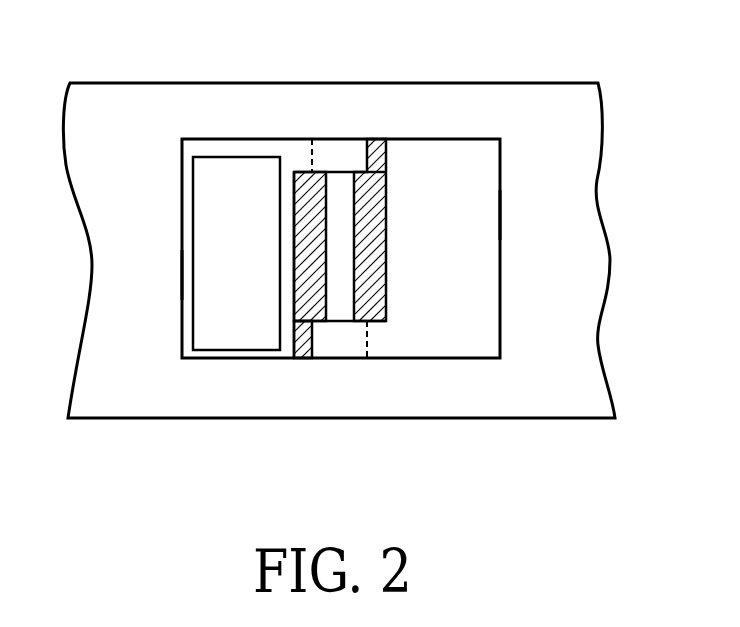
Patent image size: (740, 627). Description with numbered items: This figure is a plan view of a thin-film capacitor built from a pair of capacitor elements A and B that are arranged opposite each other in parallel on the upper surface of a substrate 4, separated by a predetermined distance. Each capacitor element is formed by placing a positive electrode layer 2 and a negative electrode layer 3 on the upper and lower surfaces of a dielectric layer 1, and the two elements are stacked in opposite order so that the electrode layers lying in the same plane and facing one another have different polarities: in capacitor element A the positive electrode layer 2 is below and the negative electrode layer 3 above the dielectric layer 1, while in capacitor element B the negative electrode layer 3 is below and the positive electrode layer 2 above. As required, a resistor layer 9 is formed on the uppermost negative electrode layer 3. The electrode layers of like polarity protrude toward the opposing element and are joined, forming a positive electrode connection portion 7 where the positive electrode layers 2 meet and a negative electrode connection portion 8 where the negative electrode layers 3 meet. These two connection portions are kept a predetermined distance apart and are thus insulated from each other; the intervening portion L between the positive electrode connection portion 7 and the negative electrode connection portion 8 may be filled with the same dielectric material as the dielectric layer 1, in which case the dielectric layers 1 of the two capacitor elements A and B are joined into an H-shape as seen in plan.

The dielectric layer 1 is at (297, 197).
The positive electrode layer 2 is at (455, 348).
The negative electrode layer 3 is at (237, 360).
The substrate 4 is at (577, 337).
The positive electrode connection portion 7 is at (338, 345).
The negative electrode connection portion 8 is at (340, 131).
The resistor layer 9 is at (199, 192).
The portion between connection portions L is at (342, 228).
The capacitor element A is at (166, 280).
The capacitor element B is at (517, 210).